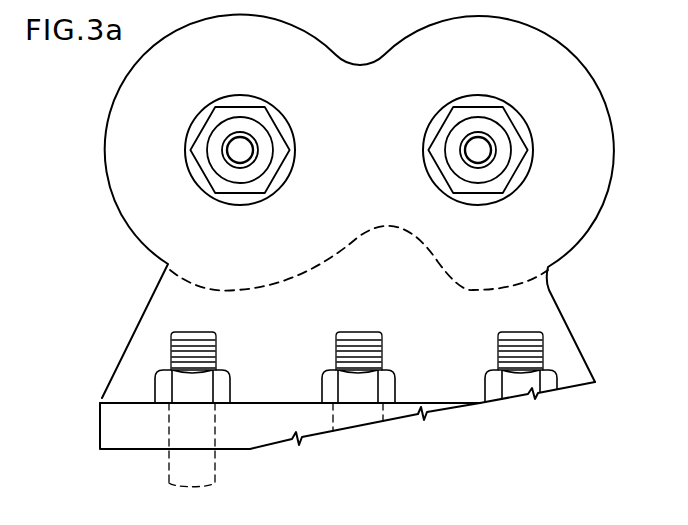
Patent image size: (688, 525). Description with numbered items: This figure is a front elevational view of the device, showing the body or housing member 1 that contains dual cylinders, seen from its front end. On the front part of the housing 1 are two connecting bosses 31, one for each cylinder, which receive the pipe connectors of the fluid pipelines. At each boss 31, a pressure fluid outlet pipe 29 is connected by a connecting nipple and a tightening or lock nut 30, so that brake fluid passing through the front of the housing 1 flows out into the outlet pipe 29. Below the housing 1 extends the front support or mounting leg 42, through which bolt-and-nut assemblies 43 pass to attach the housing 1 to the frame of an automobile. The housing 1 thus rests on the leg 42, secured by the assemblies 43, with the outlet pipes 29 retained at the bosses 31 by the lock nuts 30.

The housing member 1 is at (575, 82).
The pressure fluid outlet pipe 29 is at (483, 147).
The lock nut 30 is at (512, 158).
The connecting boss 31 is at (523, 177).
The front support leg 42 is at (137, 380).
The bolt-and-nut assembly 43 is at (543, 350).